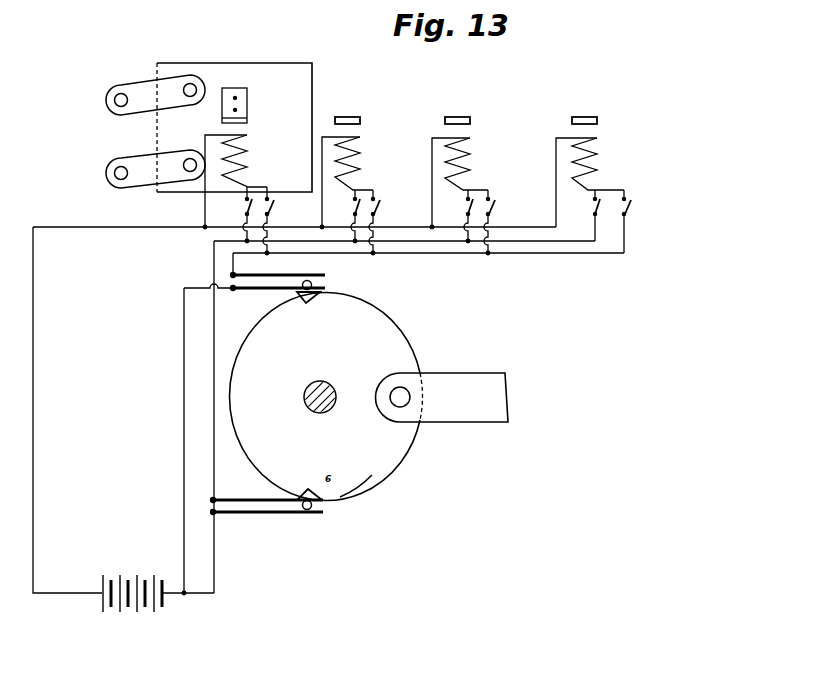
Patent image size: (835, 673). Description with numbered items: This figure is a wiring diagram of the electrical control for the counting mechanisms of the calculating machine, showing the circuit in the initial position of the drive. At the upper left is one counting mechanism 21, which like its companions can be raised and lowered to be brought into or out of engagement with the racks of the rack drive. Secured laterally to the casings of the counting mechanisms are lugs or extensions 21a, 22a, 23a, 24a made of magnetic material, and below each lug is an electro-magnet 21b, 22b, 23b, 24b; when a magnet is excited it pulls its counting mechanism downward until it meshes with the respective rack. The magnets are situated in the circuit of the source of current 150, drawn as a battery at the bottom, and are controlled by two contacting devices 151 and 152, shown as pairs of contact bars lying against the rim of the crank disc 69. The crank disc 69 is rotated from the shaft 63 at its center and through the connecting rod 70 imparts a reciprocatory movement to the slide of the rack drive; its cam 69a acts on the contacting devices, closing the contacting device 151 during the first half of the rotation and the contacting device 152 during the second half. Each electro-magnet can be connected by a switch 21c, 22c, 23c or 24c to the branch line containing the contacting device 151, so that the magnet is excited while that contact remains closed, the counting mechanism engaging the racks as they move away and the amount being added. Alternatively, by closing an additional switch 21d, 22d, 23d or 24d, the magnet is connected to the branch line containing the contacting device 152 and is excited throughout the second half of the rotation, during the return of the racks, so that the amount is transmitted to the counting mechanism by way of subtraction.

The counting mechanism 21 is at (233, 73).
The lug 21a is at (243, 105).
The electro-magnet 21b is at (242, 160).
The switch 21c is at (243, 202).
The switch 21d is at (270, 207).
The lug 22a is at (350, 115).
The electro-magnet 22b is at (353, 170).
The switch 22c is at (360, 203).
The switch 22d is at (382, 208).
The lug 23a is at (455, 115).
The electro-magnet 23b is at (465, 170).
The switch 23c is at (469, 205).
The switch 23d is at (492, 208).
The lug 24a is at (588, 115).
The electro-magnet 24b is at (595, 168).
The switch 24c is at (597, 208).
The switch 24d is at (627, 208).
The crank disk 69 is at (377, 358).
The cam 69a is at (382, 482).
The shaft 63 is at (328, 380).
The connecting rod 70 is at (455, 385).
The source of current 150 is at (122, 580).
The contacting device 151 is at (307, 517).
The contacting device 152 is at (262, 292).